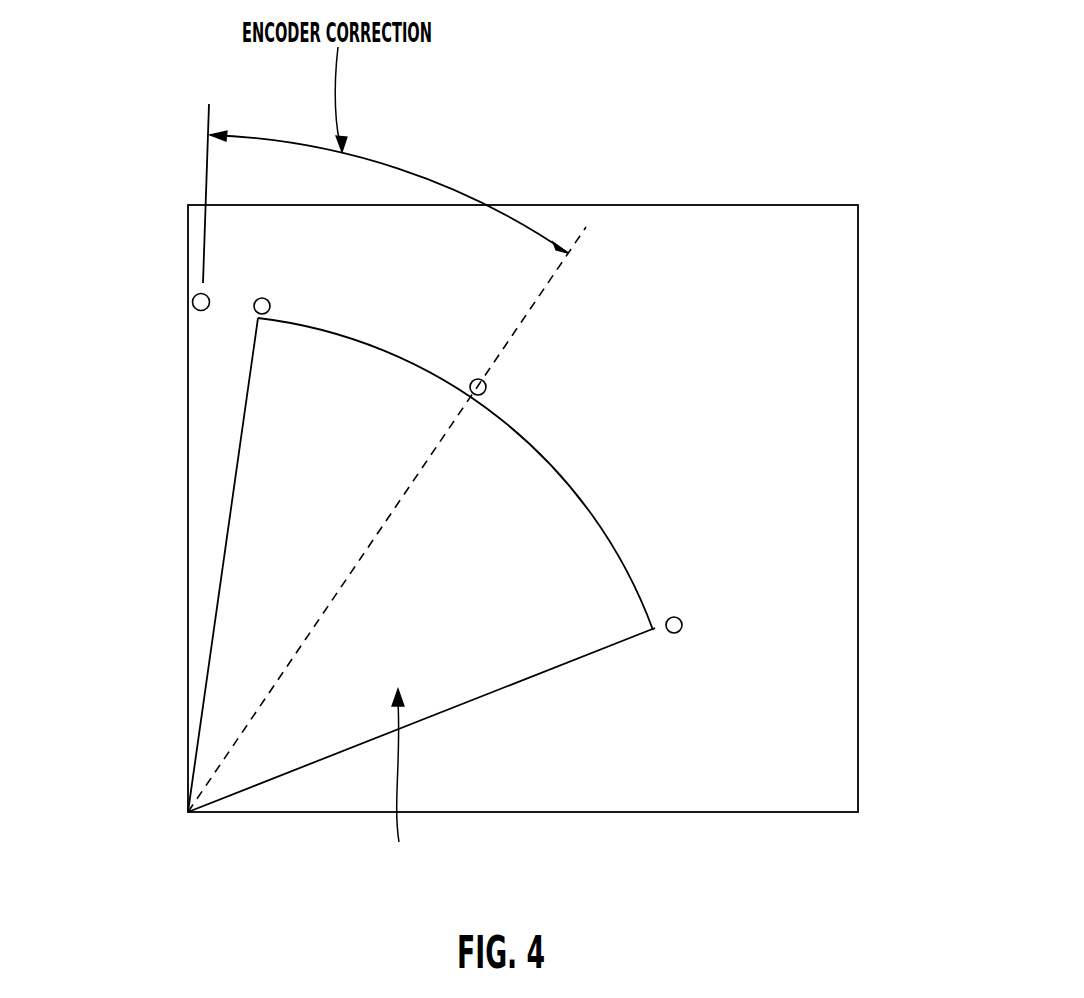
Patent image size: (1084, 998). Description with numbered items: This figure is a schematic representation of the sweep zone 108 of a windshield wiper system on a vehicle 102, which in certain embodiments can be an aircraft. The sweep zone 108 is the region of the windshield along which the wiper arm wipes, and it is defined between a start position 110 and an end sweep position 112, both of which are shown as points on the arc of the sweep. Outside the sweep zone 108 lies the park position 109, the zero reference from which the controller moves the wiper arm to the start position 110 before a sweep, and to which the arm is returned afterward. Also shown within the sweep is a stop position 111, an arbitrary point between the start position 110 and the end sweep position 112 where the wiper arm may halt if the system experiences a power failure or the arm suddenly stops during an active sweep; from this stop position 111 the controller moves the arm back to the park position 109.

The vehicle 102 is at (835, 470).
The sweep zone 108 is at (398, 782).
The park position 109 is at (207, 169).
The start position 110 is at (232, 496).
The stop position 111 is at (582, 237).
The end sweep position 112 is at (535, 678).